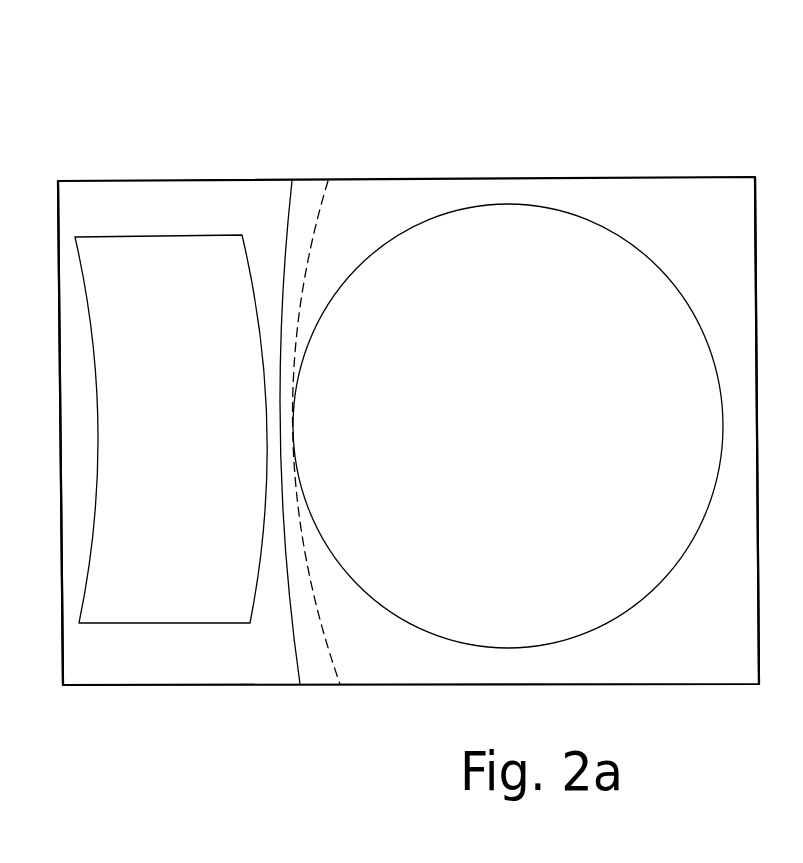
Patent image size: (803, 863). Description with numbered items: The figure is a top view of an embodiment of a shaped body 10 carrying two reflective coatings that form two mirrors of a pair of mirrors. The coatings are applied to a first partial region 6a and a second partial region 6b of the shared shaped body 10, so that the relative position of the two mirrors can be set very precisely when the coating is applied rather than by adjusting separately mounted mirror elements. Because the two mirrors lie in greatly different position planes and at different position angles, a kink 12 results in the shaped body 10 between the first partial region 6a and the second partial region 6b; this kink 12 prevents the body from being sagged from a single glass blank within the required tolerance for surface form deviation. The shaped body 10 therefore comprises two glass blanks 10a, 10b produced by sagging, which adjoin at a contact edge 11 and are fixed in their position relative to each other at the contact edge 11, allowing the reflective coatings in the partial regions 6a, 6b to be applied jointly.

The shaped body 10 is at (408, 342).
The glass blank 10a is at (85, 202).
The glass blank 10b is at (647, 197).
The first partial region 6a is at (537, 255).
The second partial region 6b is at (148, 265).
The contact edge 11 is at (288, 203).
The kink 12 is at (271, 697).